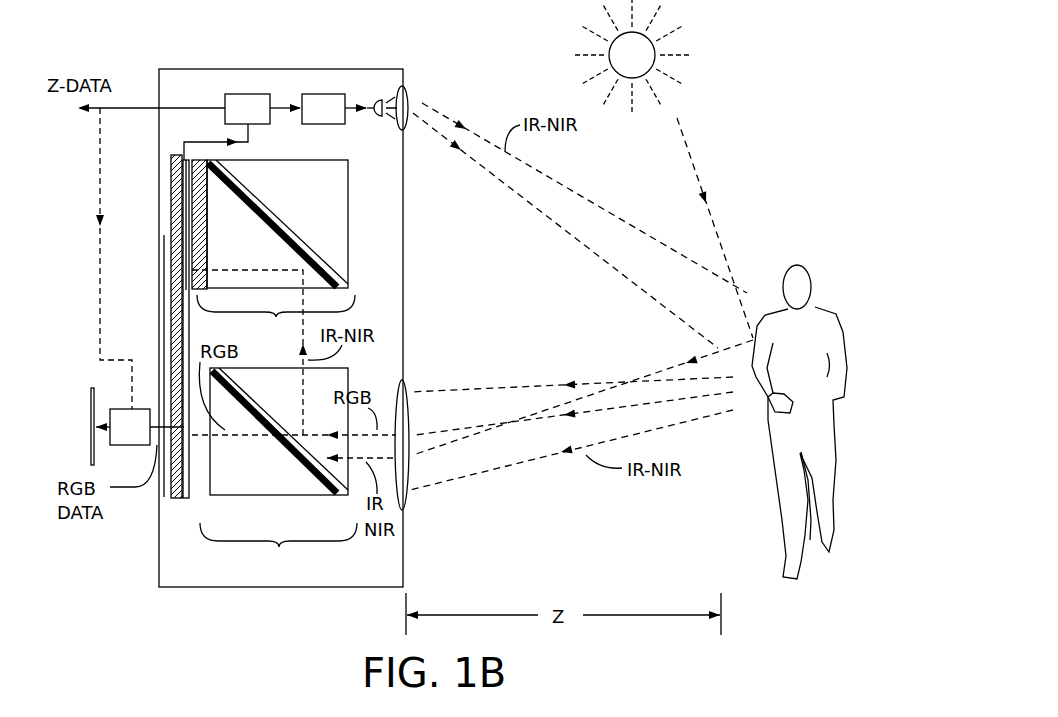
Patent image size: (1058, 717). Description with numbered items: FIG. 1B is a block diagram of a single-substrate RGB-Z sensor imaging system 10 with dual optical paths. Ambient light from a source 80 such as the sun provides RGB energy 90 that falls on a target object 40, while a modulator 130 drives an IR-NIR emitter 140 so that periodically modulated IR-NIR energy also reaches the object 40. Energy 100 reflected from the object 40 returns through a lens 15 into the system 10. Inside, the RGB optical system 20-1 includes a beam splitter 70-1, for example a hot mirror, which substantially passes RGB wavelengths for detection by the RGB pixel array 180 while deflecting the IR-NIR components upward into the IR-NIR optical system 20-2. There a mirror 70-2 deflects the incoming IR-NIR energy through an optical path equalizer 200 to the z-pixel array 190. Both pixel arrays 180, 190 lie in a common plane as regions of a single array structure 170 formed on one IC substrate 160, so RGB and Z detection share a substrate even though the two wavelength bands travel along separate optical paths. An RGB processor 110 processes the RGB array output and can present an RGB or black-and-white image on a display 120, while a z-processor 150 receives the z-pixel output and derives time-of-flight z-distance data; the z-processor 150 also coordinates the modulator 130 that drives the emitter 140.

The imaging system 10 is at (290, 55).
The lens 15 is at (412, 385).
The RGB optical system 20-1 is at (278, 549).
The IR-NIR optical system 20-2 is at (276, 322).
The target object 40 is at (812, 275).
The beam splitter 70-1 is at (292, 464).
The mirror 70-2 is at (277, 240).
The ambient light source 80 is at (643, 65).
The RGB energy 90 is at (697, 175).
The reflected light 100 is at (673, 365).
The RGB processor 110 is at (145, 436).
The display 120 is at (88, 413).
The modulator 130 is at (338, 118).
The IR-NIR emitter 140 is at (380, 117).
The z-processor 150 is at (262, 118).
The IC substrate 160 is at (165, 347).
The single array structure 170 is at (186, 508).
The array of RGB pixels 180 is at (186, 478).
The array of z-pixels 190 is at (186, 229).
The optical path equalizer 200 is at (192, 213).